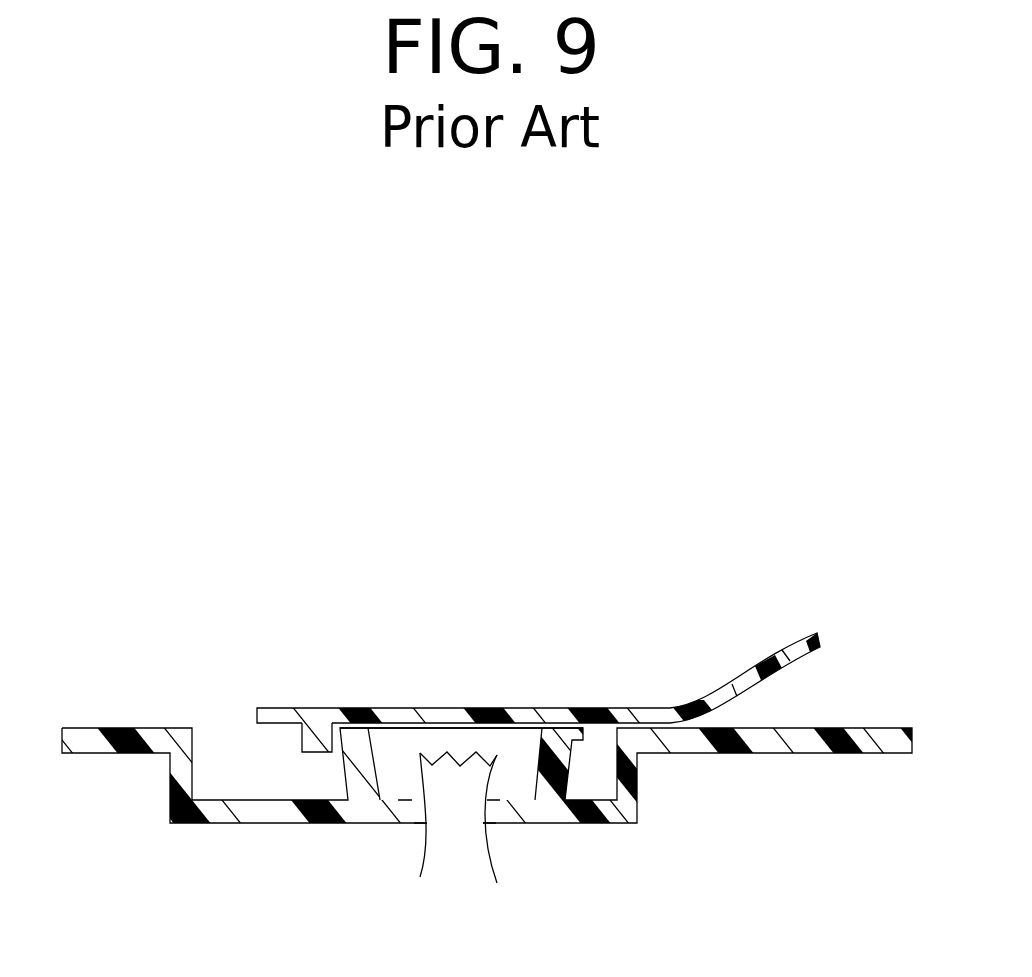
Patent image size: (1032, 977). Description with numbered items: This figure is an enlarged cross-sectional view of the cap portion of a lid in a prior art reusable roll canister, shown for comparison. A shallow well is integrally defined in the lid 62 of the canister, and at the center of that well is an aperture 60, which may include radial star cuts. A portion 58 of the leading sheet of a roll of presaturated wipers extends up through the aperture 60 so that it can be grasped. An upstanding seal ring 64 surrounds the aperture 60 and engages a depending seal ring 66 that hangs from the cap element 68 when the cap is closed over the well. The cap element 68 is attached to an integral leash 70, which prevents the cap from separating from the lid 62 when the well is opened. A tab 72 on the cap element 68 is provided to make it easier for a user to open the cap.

The portion of a leading sheet 58 is at (495, 772).
The aperture 60 is at (488, 800).
The lid 62 is at (65, 728).
The upstanding seal ring 64 is at (408, 793).
The depending seal ring 66 is at (300, 742).
The cap element 68 is at (396, 706).
The integral leash 70 is at (784, 651).
The tab 72 is at (272, 708).